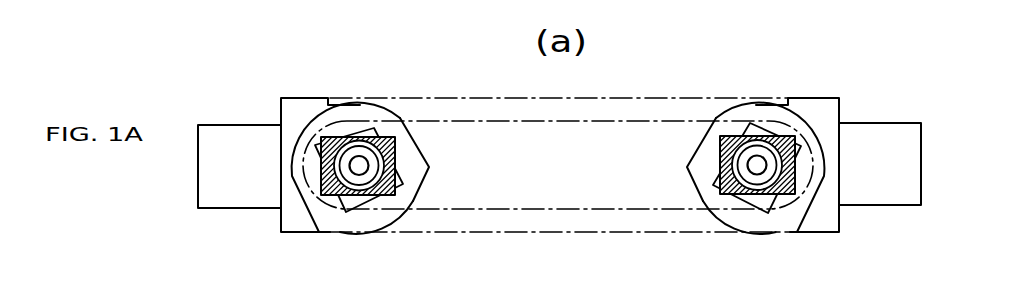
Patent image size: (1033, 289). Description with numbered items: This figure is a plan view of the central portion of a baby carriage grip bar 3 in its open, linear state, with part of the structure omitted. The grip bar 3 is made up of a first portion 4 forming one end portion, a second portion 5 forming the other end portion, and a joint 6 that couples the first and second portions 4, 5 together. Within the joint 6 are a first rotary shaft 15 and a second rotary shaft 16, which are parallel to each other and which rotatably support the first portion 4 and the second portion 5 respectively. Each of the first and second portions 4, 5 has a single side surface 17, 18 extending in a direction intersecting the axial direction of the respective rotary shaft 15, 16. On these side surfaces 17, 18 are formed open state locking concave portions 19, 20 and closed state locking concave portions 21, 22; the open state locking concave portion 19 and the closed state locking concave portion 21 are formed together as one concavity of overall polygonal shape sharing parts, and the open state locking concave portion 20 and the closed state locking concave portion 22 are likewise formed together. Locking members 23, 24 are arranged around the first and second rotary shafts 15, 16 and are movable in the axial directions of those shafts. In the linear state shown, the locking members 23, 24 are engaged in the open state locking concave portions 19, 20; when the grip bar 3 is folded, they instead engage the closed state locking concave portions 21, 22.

The grip bar 3 is at (626, 93).
The first portion 4 is at (230, 128).
The second portion 5 is at (897, 123).
The joint 6 is at (505, 98).
The first rotary shaft 15 is at (361, 148).
The second rotary shaft 16 is at (757, 153).
The side surface of the first portion 17 is at (323, 116).
The side surface of the second portion 18 is at (800, 118).
The open state locking concave portion 19 is at (410, 146).
The open state locking concave portion 20 is at (720, 152).
The closed state locking concave portion 21 is at (369, 204).
The closed state locking concave portion 22 is at (742, 198).
The locking member 23 is at (331, 196).
The locking member 24 is at (790, 197).